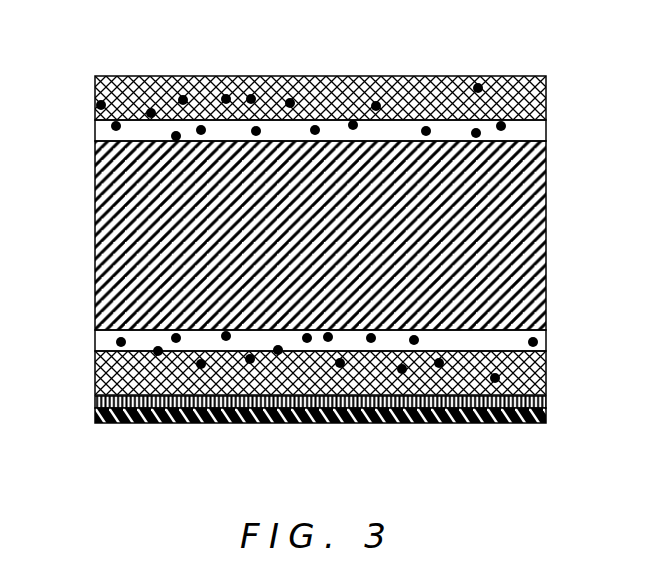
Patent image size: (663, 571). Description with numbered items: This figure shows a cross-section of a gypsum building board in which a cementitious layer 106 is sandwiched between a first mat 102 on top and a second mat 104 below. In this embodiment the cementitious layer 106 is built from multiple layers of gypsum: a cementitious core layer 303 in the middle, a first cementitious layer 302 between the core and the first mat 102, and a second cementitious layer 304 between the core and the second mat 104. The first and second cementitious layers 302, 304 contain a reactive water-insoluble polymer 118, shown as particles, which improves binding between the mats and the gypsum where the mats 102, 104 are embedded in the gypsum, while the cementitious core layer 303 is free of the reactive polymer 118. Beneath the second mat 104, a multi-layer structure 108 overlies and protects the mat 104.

The first mat 102 is at (540, 82).
The first cementitious layer 302 is at (540, 115).
The cementitious core layer 303 is at (540, 227).
The second cementitious layer 304 is at (540, 330).
The second mat 104 is at (540, 375).
The cementitious layer 106 is at (330, 227).
The multi-layer structure 108 is at (78, 389).
The reactive water-insoluble polymer 118 is at (471, 78).